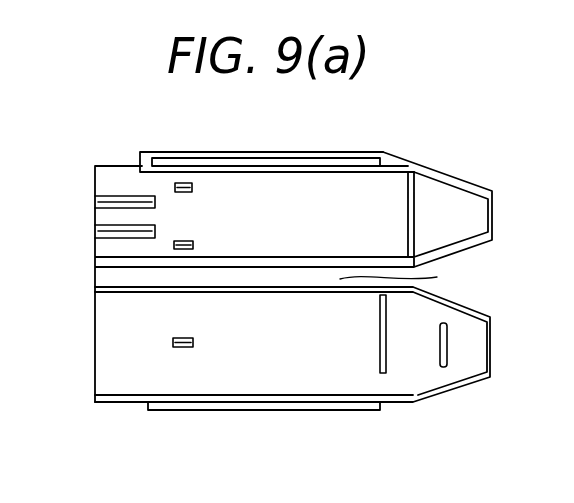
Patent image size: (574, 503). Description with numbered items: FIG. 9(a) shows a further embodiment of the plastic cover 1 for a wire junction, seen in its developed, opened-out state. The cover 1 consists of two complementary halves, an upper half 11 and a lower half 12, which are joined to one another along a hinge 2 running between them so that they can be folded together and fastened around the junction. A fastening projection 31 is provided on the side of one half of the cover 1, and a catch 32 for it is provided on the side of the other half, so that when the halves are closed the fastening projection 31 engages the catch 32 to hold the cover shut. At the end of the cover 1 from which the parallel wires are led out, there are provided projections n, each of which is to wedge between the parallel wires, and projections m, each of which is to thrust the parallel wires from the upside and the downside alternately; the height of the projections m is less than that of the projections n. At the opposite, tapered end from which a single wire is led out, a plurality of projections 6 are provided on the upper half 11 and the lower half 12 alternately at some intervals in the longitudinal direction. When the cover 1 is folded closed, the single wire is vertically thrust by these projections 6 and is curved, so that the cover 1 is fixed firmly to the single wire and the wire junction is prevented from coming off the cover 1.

The cover 1 is at (293, 258).
The upper half 11 is at (333, 227).
The lower half 12 is at (336, 352).
The hinge 2 is at (397, 280).
The fastening projection 31 is at (262, 152).
The catch 32 is at (265, 408).
The projections 6 is at (420, 183).
The projections m is at (178, 241).
The projections n is at (95, 200).